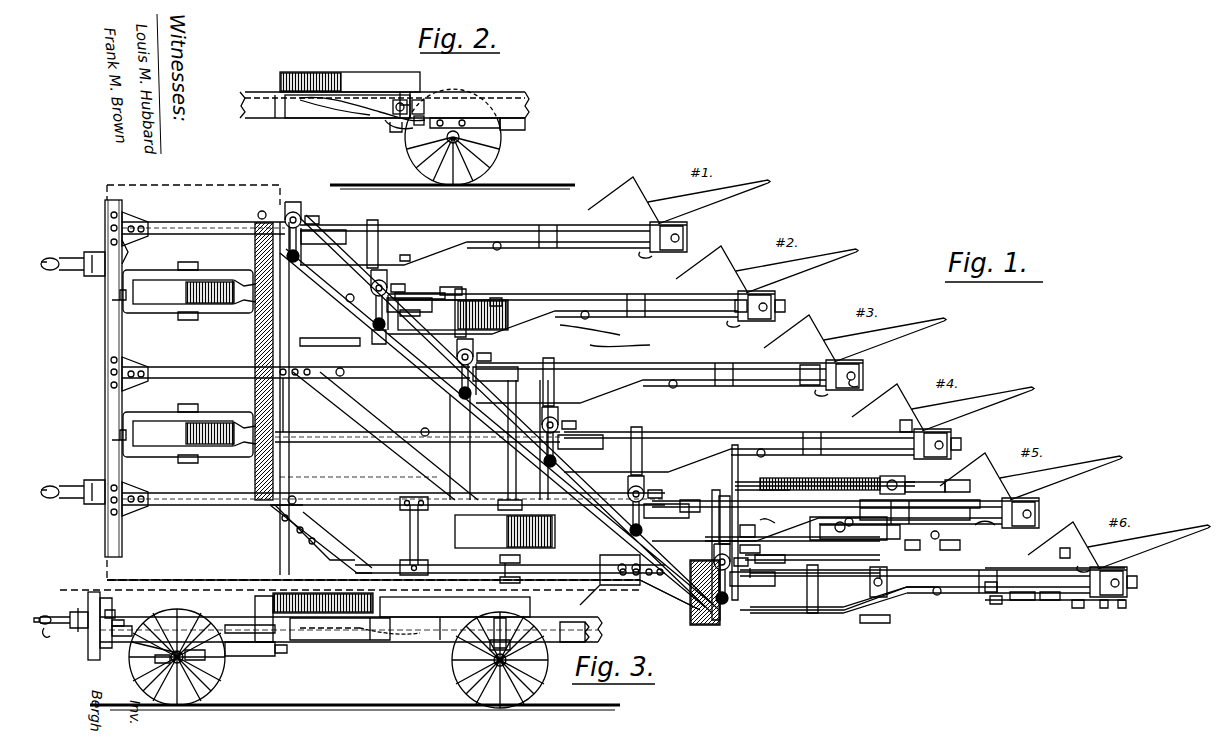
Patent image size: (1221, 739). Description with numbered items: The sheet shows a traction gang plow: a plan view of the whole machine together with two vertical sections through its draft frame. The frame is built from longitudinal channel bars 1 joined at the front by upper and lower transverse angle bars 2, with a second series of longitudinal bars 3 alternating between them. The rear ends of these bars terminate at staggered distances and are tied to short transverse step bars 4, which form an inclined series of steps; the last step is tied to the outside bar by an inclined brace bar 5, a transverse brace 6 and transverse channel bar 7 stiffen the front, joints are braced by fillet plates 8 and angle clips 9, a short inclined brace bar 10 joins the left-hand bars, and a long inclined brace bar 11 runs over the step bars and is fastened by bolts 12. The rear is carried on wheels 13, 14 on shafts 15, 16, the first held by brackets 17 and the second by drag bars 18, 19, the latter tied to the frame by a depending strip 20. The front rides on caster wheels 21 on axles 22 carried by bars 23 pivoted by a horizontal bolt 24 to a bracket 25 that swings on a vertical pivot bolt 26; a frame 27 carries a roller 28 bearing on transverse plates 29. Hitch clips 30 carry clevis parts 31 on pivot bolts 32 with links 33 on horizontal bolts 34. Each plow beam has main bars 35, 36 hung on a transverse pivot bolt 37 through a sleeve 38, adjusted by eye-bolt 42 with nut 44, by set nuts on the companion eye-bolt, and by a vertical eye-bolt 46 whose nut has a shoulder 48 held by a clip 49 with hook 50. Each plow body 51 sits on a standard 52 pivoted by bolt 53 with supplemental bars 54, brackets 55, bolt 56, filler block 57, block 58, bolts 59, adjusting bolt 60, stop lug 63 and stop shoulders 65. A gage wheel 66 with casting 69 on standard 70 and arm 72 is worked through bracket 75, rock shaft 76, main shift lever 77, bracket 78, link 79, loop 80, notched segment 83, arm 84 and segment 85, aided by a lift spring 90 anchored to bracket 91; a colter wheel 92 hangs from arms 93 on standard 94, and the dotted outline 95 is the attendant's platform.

In FIG. 2, the longitudinal frame bars 1 is at (250, 90).
In FIG. 1, the longitudinal frame bars 1 is at (172, 494).
In FIG. 3, the longitudinal frame bars 1 is at (218, 616).
In FIG. 1, the transverse angle bars 2 is at (107, 388).
In FIG. 3, the transverse angle bars 2 is at (102, 666).
In FIG. 2, the second series of longitudinal frame bars 3 is at (298, 120).
In FIG. 1, the second series of longitudinal frame bars 3 is at (318, 308).
In FIG. 3, the second series of longitudinal frame bars 3 is at (314, 642).
In FIG. 2, the short transverse step bars 4 is at (272, 113).
In FIG. 1, the short transverse step bars 4 is at (514, 396).
In FIG. 3, the short transverse step bars 4 is at (442, 620).
In FIG. 1, the inclined brace bar 5 is at (661, 594).
In FIG. 3, the inclined brace bar 5 is at (320, 648).
In FIG. 1, the transverse brace 6 is at (410, 524).
In FIG. 1, the transverse channel bar 7 is at (288, 457).
In FIG. 3, the transverse channel bar 7 is at (262, 616).
In FIG. 1, the fillet plates 8 is at (304, 519).
In FIG. 1, the angle clips 9 is at (632, 566).
In FIG. 1, the short inclined brace bar 10 is at (368, 406).
In FIG. 2, the long inclined brace bar 11 is at (338, 82).
In FIG. 3, the long inclined brace bar 11 is at (533, 604).
In FIG. 1, the bolts 12 is at (580, 538).
In FIG. 1, the wheel 13 is at (520, 552).
In FIG. 3, the wheel 13 is at (465, 684).
In FIG. 2, the wheel 14 is at (505, 128).
In FIG. 1, the wheel 14 is at (478, 300).
In FIG. 1, the shaft 15 is at (521, 474).
In FIG. 2, the shaft 16 is at (465, 138).
In FIG. 1, the shaft 16 is at (452, 286).
In FIG. 1, the brackets 17 is at (482, 532).
In FIG. 3, the brackets 17 is at (512, 648).
In FIG. 2, the drag bar 18 is at (380, 128).
In FIG. 1, the drag bar 18 is at (415, 292).
In FIG. 2, the drag bar 19 is at (350, 128).
In FIG. 1, the drag bar 19 is at (322, 336).
In FIG. 2, the depending strip 20 is at (410, 105).
In FIG. 1, the depending strip 20 is at (385, 350).
In FIG. 1, the caster wheels 21 is at (204, 406).
In FIG. 3, the caster wheels 21 is at (216, 674).
In FIG. 1, the shafts or axles 22 is at (174, 464).
In FIG. 3, the shafts or axles 22 is at (156, 660).
In FIG. 1, the bars 23 is at (164, 438).
In FIG. 3, the bars 23 is at (202, 658).
In FIG. 1, the horizontal pivot bolt 24 is at (128, 250).
In FIG. 3, the horizontal pivot bolt 24 is at (134, 626).
In FIG. 1, the bracket 25 is at (118, 430).
In FIG. 3, the bracket 25 is at (108, 606).
In FIG. 1, the vertical pivot bolt 26 is at (113, 434).
In FIG. 3, the vertical pivot bolt 26 is at (120, 616).
In FIG. 1, the frame 27 is at (228, 422).
In FIG. 3, the frame 27 is at (252, 658).
In FIG. 1, the roller 28 is at (240, 446).
In FIG. 3, the roller 28 is at (282, 652).
In FIG. 1, the transverse plates 29 is at (255, 480).
In FIG. 3, the transverse plates 29 is at (248, 634).
In FIG. 1, the U-shaped clips 30 is at (94, 479).
In FIG. 3, the U-shaped clips 30 is at (67, 608).
In FIG. 1, the clevis part 31 is at (65, 502).
In FIG. 3, the clevis part 31 is at (78, 612).
In FIG. 1, the vertical pivot bolt 32 is at (84, 500).
In FIG. 3, the vertical pivot bolt 32 is at (82, 604).
In FIG. 1, the link 33 is at (49, 494).
In FIG. 3, the link 33 is at (42, 615).
In FIG. 1, the horizontal bolt 34 is at (86, 494).
In FIG. 3, the horizontal bolt 34 is at (56, 626).
In FIG. 1, the main beam bar 35 is at (805, 592).
In FIG. 2, the main beam bar 36 is at (488, 98).
In FIG. 1, the main beam bar 36 is at (1035, 584).
In FIG. 3, the main beam bar 36 is at (588, 624).
In FIG. 1, the transverse pivot bolt 37 is at (740, 628).
In FIG. 1, the sleeve 38 is at (666, 511).
In FIG. 1, the eye-bolt 42 is at (752, 618).
In FIG. 1, the nut 44 is at (692, 622).
In FIG. 1, the eye-bolt 46 is at (632, 480).
In FIG. 1, the annular rib or shoulder 48 is at (515, 310).
In FIG. 1, the clip 49 is at (682, 596).
In FIG. 1, the hook 50 is at (565, 415).
In FIG. 1, the plow body 51 is at (1213, 524).
In FIG. 1, the standard 52 is at (1046, 606).
In FIG. 1, the through bolt 53 is at (1030, 604).
In FIG. 1, the supplemental beam bars 54 is at (1078, 604).
In FIG. 1, the cast metal brackets 55 is at (996, 622).
In FIG. 1, the through bolt 56 is at (992, 485).
In FIG. 1, the filler block 57 is at (712, 384).
In FIG. 3, the filler block 57 is at (390, 644).
In FIG. 1, the cast metal block 58 is at (1128, 578).
In FIG. 1, the transverse bolts 59 is at (1116, 608).
In FIG. 1, the link or bolt 60 is at (1137, 586).
In FIG. 1, the stop or lug 63 is at (1086, 566).
In FIG. 1, the stop shoulders 65 is at (774, 516).
In FIG. 1, the gage wheel 66 is at (986, 614).
In FIG. 1, the casting 69 is at (860, 524).
In FIG. 1, the standard section 70 is at (924, 484).
In FIG. 1, the arm 72 is at (958, 488).
In FIG. 1, the bracket 75 is at (730, 498).
In FIG. 1, the rock shaft 76 is at (710, 531).
In FIG. 1, the main shift lever 77 is at (695, 496).
In FIG. 1, the cast metal bracket 78 is at (750, 528).
In FIG. 1, the rigid link 79 is at (787, 486).
In FIG. 1, the loop 80 is at (940, 476).
In FIG. 1, the notched segment 83 is at (768, 540).
In FIG. 1, the arm 84 is at (750, 553).
In FIG. 1, the notched segment 85 is at (776, 559).
In FIG. 1, the lift spring 90 is at (931, 612).
In FIG. 1, the bracket 91 is at (908, 618).
In FIG. 1, the colter wheel 92 is at (940, 624).
In FIG. 1, the arms 93 is at (960, 622).
In FIG. 1, the standard 94 is at (892, 560).
In FIG. 1, the platform 95 is at (266, 577).